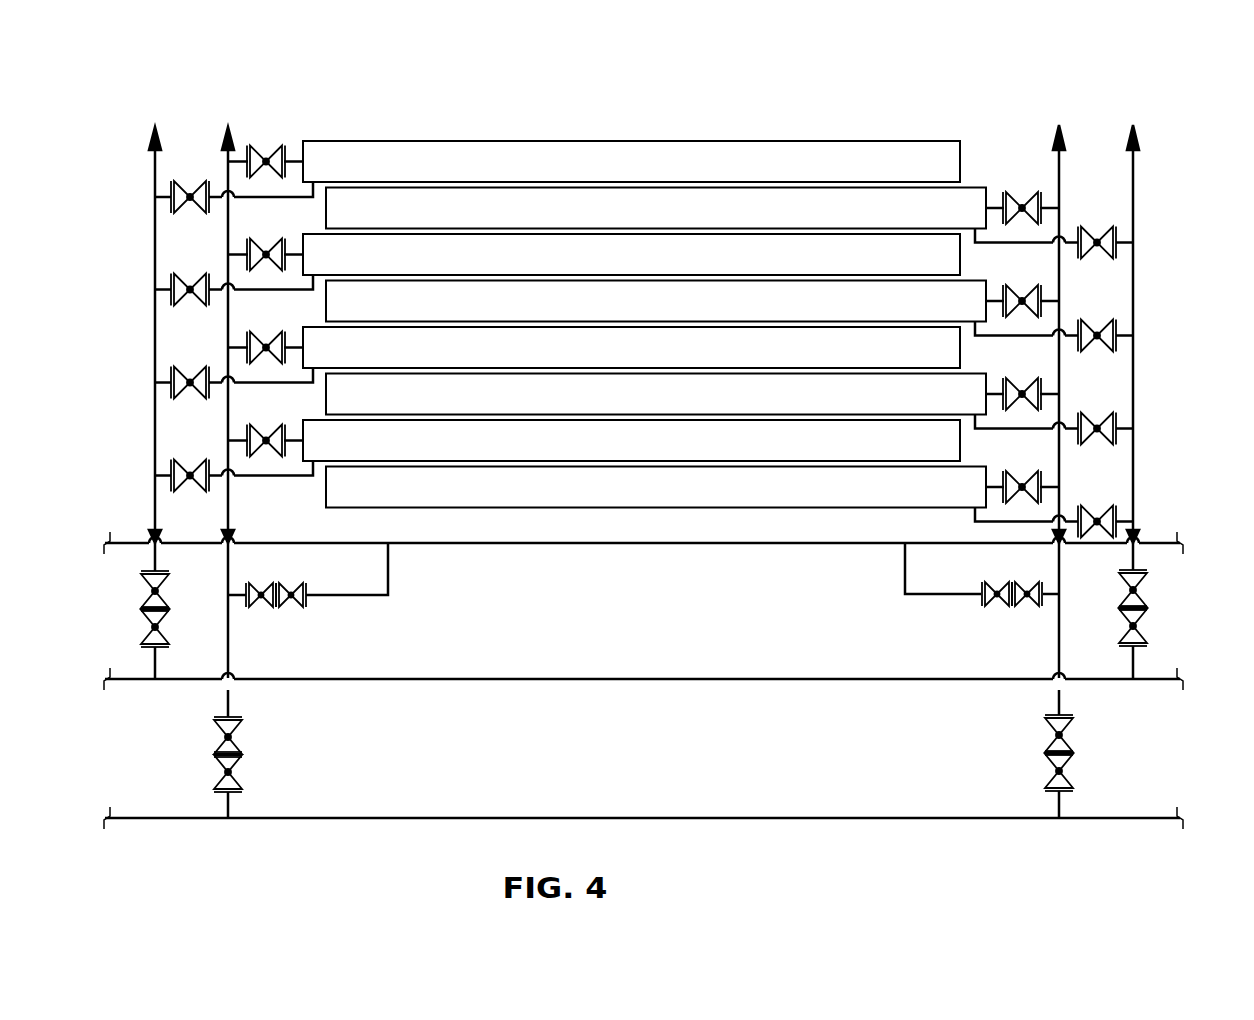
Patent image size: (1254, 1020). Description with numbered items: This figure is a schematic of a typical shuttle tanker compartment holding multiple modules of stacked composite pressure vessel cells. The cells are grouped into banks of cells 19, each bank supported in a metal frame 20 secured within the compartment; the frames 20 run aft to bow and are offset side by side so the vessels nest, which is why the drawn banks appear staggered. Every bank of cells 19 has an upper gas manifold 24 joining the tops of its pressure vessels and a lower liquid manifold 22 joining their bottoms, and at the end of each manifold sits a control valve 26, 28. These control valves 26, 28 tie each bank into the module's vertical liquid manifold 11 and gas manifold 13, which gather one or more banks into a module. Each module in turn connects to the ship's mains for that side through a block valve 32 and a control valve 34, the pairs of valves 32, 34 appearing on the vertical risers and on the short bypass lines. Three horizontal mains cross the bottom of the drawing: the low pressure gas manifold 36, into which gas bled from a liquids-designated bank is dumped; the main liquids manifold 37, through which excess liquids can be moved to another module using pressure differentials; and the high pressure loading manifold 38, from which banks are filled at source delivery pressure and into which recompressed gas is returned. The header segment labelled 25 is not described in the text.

The liquid manifold 11 is at (150, 560).
The gas manifold 13 is at (228, 642).
The bank of cells 19 is at (772, 203).
The metal frame 20 is at (547, 187).
The lower liquid manifold 22 is at (218, 384).
The upper gas manifold 24 is at (293, 345).
The header 25 is at (482, 677).
The control valve 26 is at (265, 148).
The control valve 28 is at (189, 183).
The block valve 32 is at (148, 630).
The control valve 34 is at (148, 592).
The low pressure gas manifold 36 is at (750, 546).
The main liquids manifold 37 is at (750, 681).
The high pressure loading manifold 38 is at (750, 820).